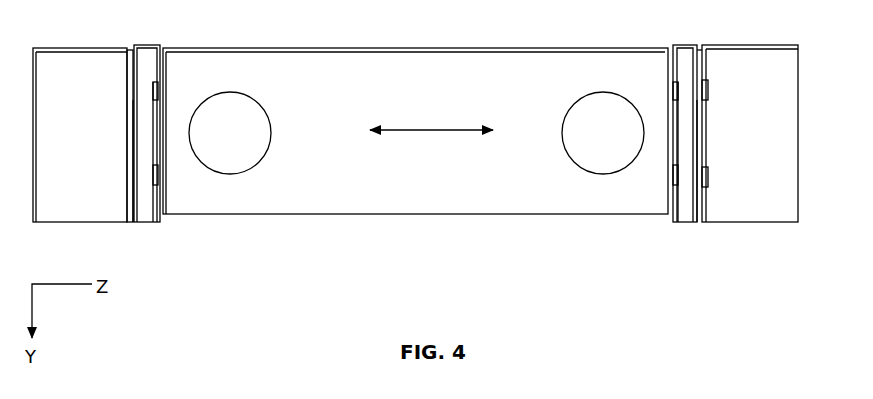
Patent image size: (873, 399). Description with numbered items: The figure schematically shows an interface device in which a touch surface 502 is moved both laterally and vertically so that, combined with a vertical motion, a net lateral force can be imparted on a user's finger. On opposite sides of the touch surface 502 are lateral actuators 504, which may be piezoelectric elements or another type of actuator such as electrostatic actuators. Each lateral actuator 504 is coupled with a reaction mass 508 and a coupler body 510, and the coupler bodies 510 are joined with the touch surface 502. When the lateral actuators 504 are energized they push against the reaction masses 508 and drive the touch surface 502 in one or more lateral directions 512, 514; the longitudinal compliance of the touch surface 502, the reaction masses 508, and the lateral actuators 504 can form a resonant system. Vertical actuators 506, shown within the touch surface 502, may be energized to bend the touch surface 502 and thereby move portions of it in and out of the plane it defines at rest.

The touch surface 502 is at (637, 56).
The lateral actuators 504 is at (138, 190).
The vertical actuators 506 is at (238, 90).
The reaction masses 508 is at (70, 60).
The coupler bodies 510 is at (142, 216).
The lateral direction 512 is at (392, 133).
The lateral direction 514 is at (465, 133).